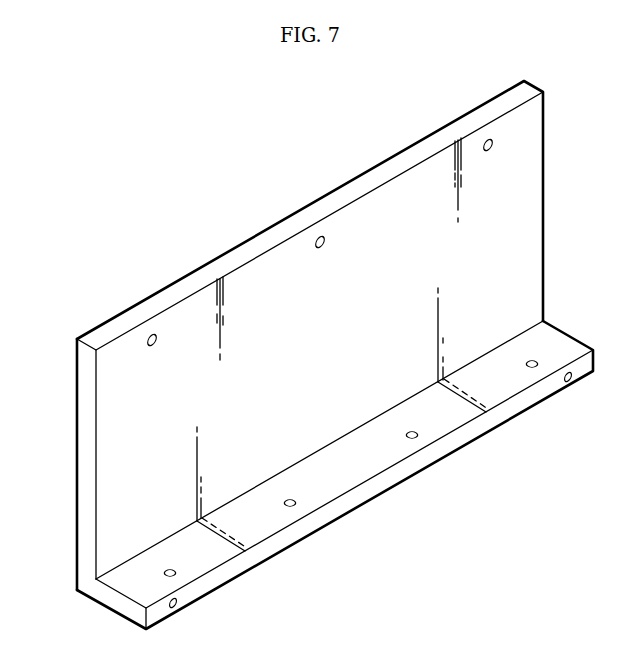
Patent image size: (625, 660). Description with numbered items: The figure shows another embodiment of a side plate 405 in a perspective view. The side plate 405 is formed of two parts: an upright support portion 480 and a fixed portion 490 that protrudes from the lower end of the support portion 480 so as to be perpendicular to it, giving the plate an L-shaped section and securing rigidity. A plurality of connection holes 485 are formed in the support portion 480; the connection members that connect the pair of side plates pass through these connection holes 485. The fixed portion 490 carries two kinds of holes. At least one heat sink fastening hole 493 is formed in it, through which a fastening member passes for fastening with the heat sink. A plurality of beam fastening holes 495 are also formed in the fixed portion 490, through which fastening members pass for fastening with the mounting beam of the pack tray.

The side plate 405 is at (233, 176).
The support portion 480 is at (86, 408).
The connection holes 485 is at (495, 148).
The fixed portion 490 is at (116, 603).
The heat sink fastening hole 493 is at (177, 606).
The beam fastening holes 495 is at (296, 504).